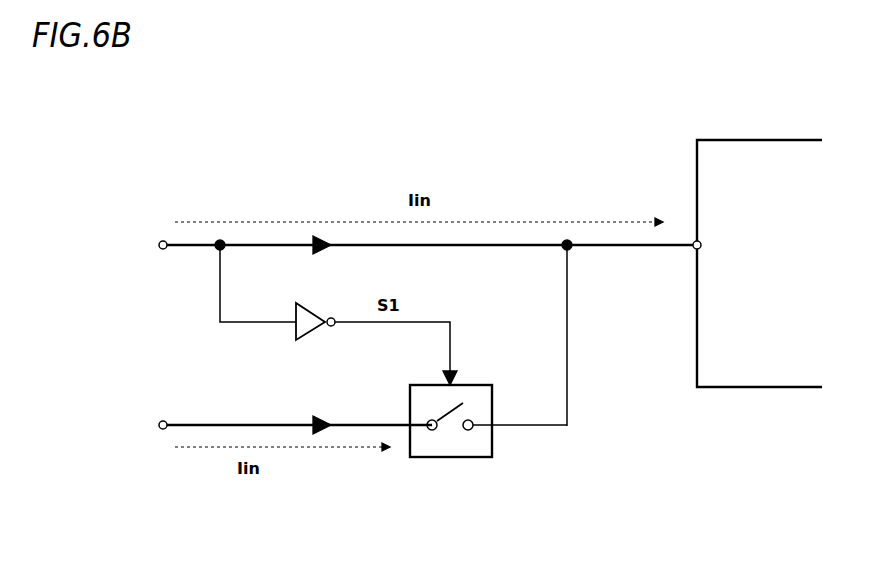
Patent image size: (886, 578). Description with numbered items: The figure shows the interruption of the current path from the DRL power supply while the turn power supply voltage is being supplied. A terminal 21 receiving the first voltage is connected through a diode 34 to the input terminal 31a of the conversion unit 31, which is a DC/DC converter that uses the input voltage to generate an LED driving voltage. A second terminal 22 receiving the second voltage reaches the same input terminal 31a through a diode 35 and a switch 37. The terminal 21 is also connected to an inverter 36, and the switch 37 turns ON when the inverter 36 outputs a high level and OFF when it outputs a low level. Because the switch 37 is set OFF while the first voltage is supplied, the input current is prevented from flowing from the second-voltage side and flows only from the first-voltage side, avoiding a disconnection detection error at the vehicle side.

The terminal 21 is at (163, 241).
The terminal 22 is at (160, 429).
The conversion unit 31 is at (740, 140).
The input terminal 31a is at (695, 240).
The diode 34 is at (320, 236).
The diode 35 is at (318, 416).
The inverter 36 is at (320, 320).
The switch 37 is at (455, 458).